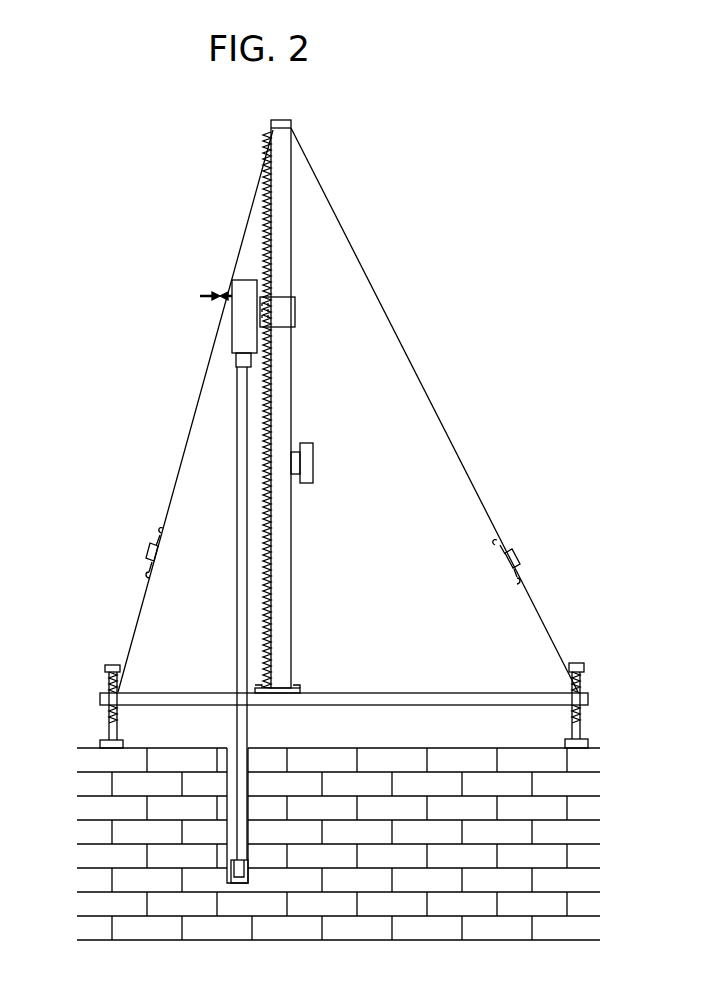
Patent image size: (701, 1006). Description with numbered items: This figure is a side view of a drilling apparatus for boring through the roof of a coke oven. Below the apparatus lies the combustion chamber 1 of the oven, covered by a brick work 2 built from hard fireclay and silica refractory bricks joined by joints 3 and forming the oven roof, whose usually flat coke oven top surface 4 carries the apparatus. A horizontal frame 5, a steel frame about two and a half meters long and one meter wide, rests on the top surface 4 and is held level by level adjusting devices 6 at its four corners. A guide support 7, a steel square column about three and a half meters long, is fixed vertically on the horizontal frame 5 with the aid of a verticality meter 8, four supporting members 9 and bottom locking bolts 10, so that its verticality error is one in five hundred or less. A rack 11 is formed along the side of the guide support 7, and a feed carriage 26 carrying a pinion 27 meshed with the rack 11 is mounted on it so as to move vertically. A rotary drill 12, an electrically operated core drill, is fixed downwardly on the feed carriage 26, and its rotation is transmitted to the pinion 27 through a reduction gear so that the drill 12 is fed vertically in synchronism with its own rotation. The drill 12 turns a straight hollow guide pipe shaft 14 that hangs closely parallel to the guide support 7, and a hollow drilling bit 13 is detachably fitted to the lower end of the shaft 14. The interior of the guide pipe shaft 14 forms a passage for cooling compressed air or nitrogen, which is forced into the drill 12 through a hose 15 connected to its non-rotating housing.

The combustion chamber 1 is at (270, 988).
The brick work 2 is at (152, 890).
The joints 3 is at (583, 892).
The coke oven top surface 4 is at (592, 746).
The horizontal frame 5 is at (330, 693).
The level adjusting devices 6 is at (112, 668).
The guide support 7 is at (279, 355).
The verticality meter 8 is at (305, 443).
The supporting members 9 is at (175, 485).
The bottom locking bolts 10 is at (290, 688).
The rack 11 is at (257, 408).
The rotary drill 12 is at (233, 325).
The drilling bit 13 is at (240, 872).
The guide pipe shaft 14 is at (237, 548).
The hose 15 is at (213, 293).
The feed carriage 26 is at (296, 302).
The pinion 27 is at (272, 320).